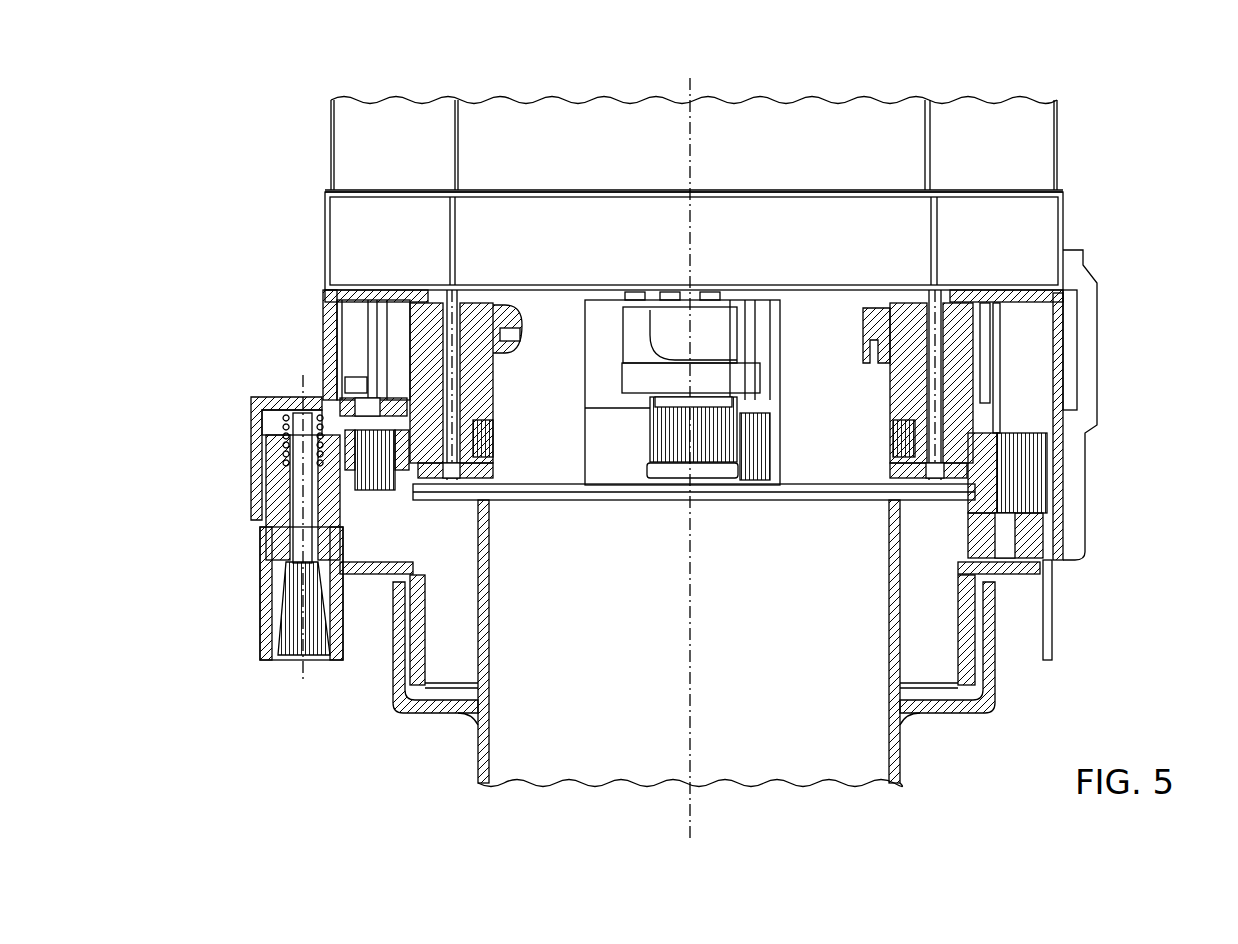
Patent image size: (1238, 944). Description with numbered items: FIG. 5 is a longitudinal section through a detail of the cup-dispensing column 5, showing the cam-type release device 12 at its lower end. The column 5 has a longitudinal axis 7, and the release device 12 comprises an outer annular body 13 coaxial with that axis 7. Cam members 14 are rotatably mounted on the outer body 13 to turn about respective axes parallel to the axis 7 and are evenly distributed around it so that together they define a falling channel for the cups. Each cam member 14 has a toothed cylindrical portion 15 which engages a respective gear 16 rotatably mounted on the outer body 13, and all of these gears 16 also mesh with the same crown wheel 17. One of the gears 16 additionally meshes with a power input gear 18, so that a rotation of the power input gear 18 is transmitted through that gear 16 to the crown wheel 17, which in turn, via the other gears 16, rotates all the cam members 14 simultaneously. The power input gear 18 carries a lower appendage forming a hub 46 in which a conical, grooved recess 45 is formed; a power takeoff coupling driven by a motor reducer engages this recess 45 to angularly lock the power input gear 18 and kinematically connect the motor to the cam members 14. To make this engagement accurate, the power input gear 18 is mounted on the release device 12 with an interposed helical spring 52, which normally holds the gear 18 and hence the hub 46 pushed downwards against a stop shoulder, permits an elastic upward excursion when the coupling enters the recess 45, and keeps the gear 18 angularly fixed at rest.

The column 5 is at (1078, 156).
The longitudinal axis 7 is at (690, 175).
The release device 12 is at (1114, 358).
The outer annular body 13 is at (1060, 470).
The cam member 14 is at (632, 378).
The toothed cylindrical portion 15 is at (488, 437).
The gear 16 is at (745, 472).
The crown wheel 17 is at (423, 633).
The power input gear 18 is at (278, 490).
The conical grooved recess 45 is at (290, 632).
The hub 46 is at (265, 585).
The helical spring 52 is at (282, 427).